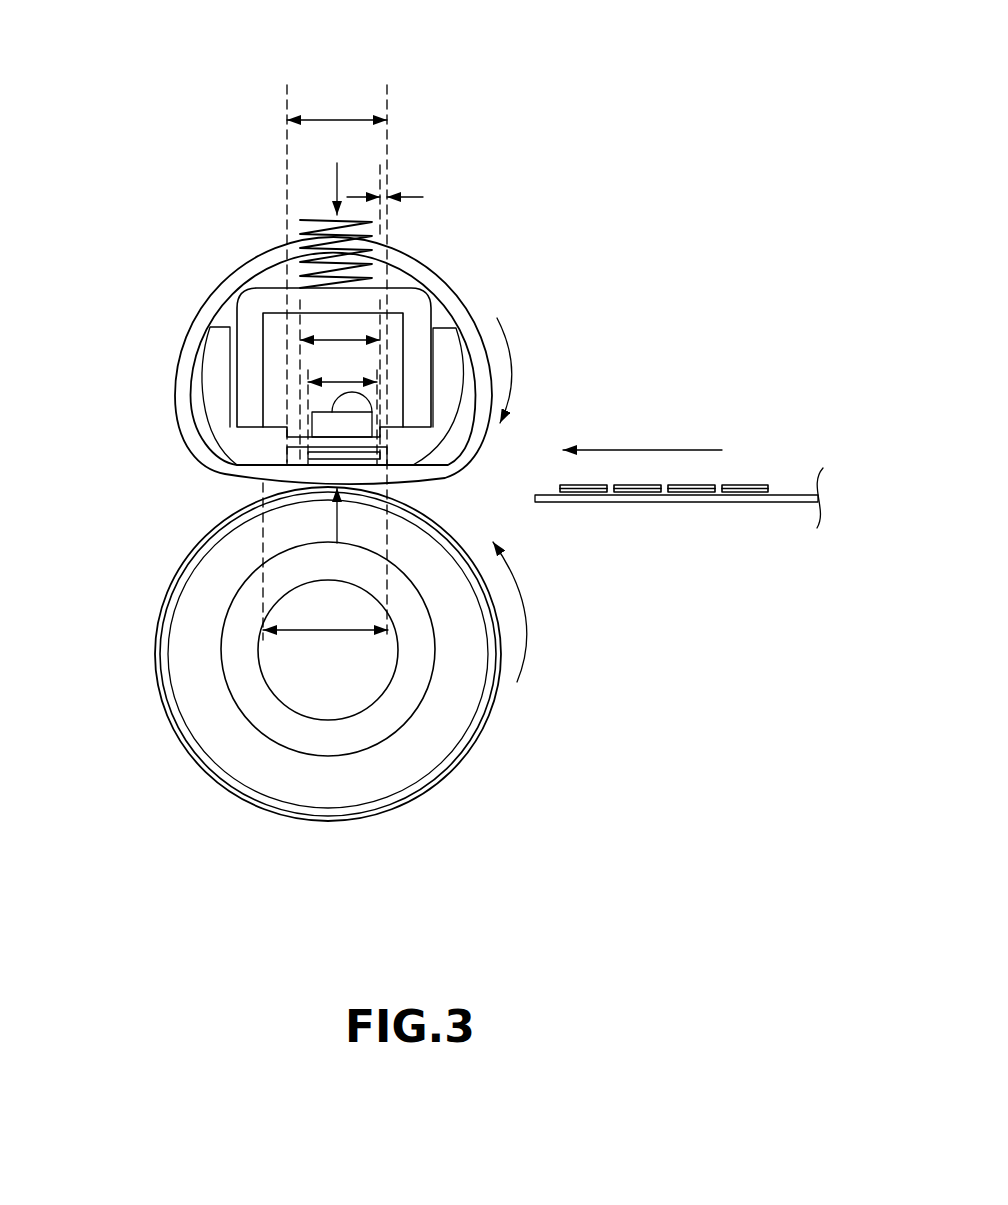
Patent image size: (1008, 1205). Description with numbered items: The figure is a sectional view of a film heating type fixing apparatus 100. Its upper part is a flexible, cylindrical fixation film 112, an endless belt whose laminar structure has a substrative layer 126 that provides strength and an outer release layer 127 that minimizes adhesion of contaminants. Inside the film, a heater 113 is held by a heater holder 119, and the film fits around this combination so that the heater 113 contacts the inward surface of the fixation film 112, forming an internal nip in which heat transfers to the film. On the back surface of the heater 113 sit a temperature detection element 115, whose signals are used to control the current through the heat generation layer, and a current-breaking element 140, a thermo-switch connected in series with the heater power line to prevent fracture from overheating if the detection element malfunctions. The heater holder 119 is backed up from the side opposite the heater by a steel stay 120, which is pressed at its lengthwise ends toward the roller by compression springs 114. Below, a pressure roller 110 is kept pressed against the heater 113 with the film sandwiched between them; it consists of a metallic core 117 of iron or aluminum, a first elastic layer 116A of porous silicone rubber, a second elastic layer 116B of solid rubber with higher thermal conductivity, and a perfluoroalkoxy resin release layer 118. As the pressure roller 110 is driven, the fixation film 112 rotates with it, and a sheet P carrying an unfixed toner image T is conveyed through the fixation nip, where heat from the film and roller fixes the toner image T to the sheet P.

The fixing apparatus 100 is at (490, 109).
The pressure roller 110 is at (157, 592).
The fixation film 112 is at (277, 237).
The heater 113 is at (300, 452).
The compression spring 114 is at (307, 218).
The temperature detection element 115 is at (318, 424).
The first elastic layer 116A is at (457, 752).
The second elastic layer 116B is at (443, 705).
The metallic core 117 is at (263, 660).
The release layer 118 is at (442, 787).
The heater holder 119 is at (443, 345).
The stay 120 is at (415, 290).
The substrative layer 126 is at (223, 285).
The release layer 127 is at (188, 312).
The current-breaking element 140 is at (333, 404).
The toner image T is at (747, 483).
The sheet P is at (679, 500).